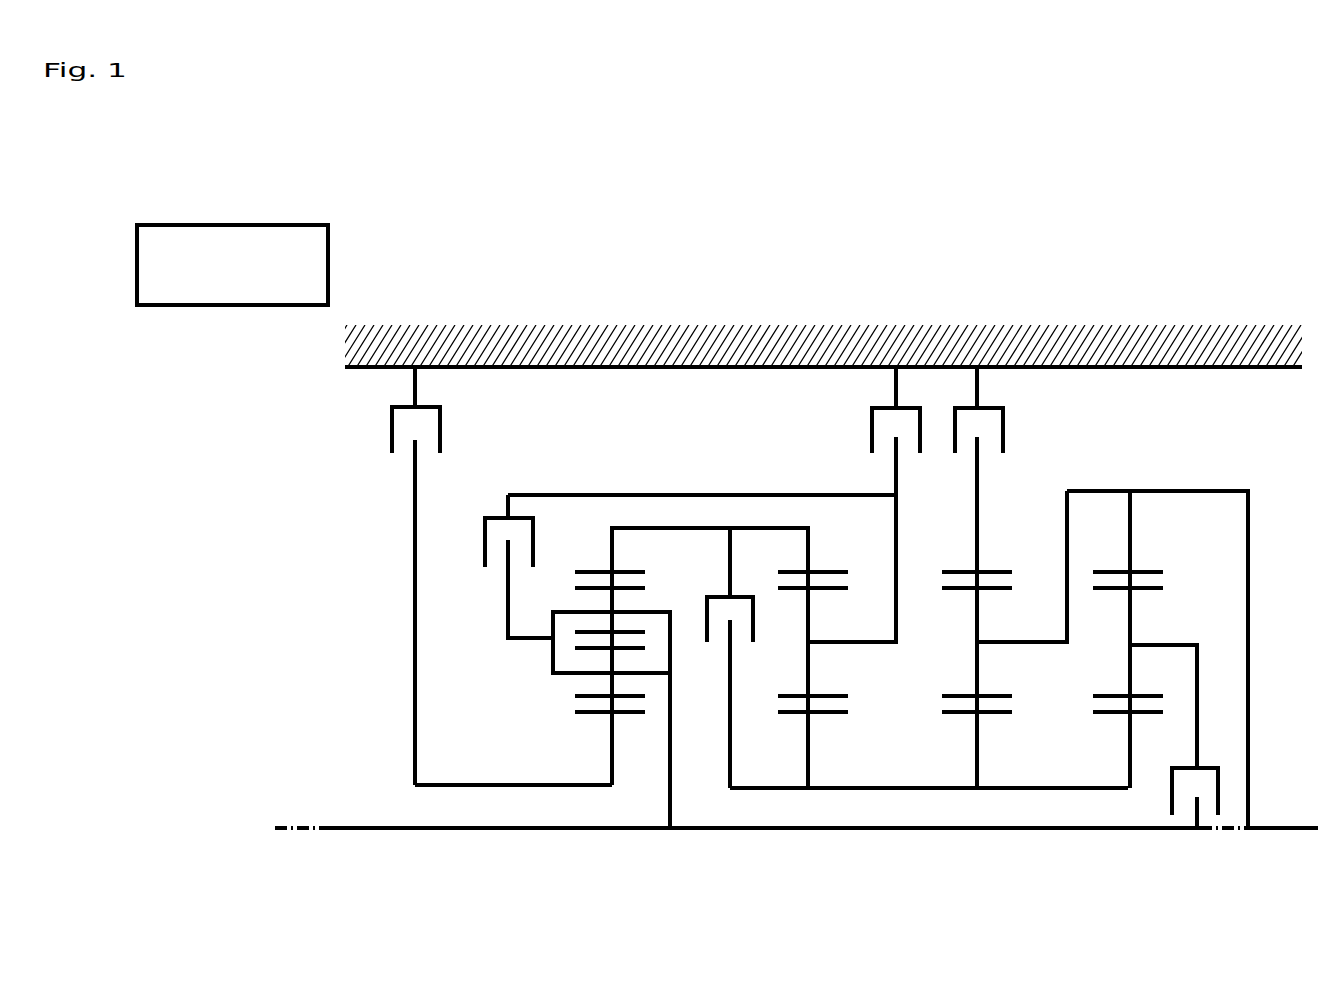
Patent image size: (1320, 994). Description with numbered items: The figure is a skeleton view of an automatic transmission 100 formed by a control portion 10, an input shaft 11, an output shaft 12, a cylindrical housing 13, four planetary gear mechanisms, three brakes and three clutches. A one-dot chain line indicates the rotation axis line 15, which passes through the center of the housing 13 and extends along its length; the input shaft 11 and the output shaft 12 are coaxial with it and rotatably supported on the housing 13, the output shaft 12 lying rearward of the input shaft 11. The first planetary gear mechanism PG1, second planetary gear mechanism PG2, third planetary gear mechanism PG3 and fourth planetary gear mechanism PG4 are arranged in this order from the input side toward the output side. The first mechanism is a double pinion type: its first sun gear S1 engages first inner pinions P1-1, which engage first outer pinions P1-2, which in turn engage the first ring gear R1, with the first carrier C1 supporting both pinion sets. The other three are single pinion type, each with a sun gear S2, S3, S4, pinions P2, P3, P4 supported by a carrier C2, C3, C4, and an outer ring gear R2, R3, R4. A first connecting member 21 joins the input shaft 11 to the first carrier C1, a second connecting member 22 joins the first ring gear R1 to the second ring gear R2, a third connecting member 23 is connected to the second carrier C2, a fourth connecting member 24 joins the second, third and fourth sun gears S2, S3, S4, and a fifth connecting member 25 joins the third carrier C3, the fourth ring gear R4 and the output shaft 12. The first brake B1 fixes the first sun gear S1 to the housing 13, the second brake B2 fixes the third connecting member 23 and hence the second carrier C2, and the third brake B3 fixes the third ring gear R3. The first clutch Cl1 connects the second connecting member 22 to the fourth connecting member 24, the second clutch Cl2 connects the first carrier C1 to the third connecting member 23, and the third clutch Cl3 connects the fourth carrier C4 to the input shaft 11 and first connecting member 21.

The control portion 10 is at (231, 225).
The automatic transmission 100 is at (893, 284).
The housing 13 is at (660, 342).
The input shaft 11 is at (358, 827).
The output shaft 12 is at (1288, 827).
The rotation axis line 15 is at (295, 832).
The first connecting member 21 is at (670, 770).
The second connecting member 22 is at (650, 528).
The third connecting member 23 is at (898, 550).
The fourth connecting member 24 is at (902, 788).
The fifth connecting member 25 is at (1190, 491).
The first brake B1 is at (372, 436).
The second brake B2 is at (852, 431).
The third brake B3 is at (1019, 430).
The first clutch Cl1 is at (690, 600).
The second clutch Cl2 is at (460, 542).
The third clutch Cl3 is at (1237, 776).
The first planetary gear mechanism PG1 is at (611, 810).
The second planetary gear mechanism PG2 is at (807, 812).
The third planetary gear mechanism PG3 is at (975, 812).
The fourth planetary gear mechanism PG4 is at (1126, 812).
The first ring gear R1 is at (585, 575).
The second ring gear R2 is at (830, 576).
The third ring gear R3 is at (1000, 576).
The fourth ring gear R4 is at (1152, 576).
The first carrier C1 is at (553, 665).
The second carrier C2 is at (847, 641).
The third carrier C3 is at (1018, 641).
The fourth carrier C4 is at (1175, 644).
The first inner pinions P1-1 is at (585, 698).
The first outer pinions P1-2 is at (585, 590).
The second pinions P2 is at (835, 698).
The third pinions P3 is at (1002, 698).
The fourth pinions P4 is at (1152, 698).
The first sun gear S1 is at (585, 713).
The second sun gear S2 is at (840, 714).
The third sun gear S3 is at (1008, 714).
The fourth sun gear S4 is at (1155, 714).